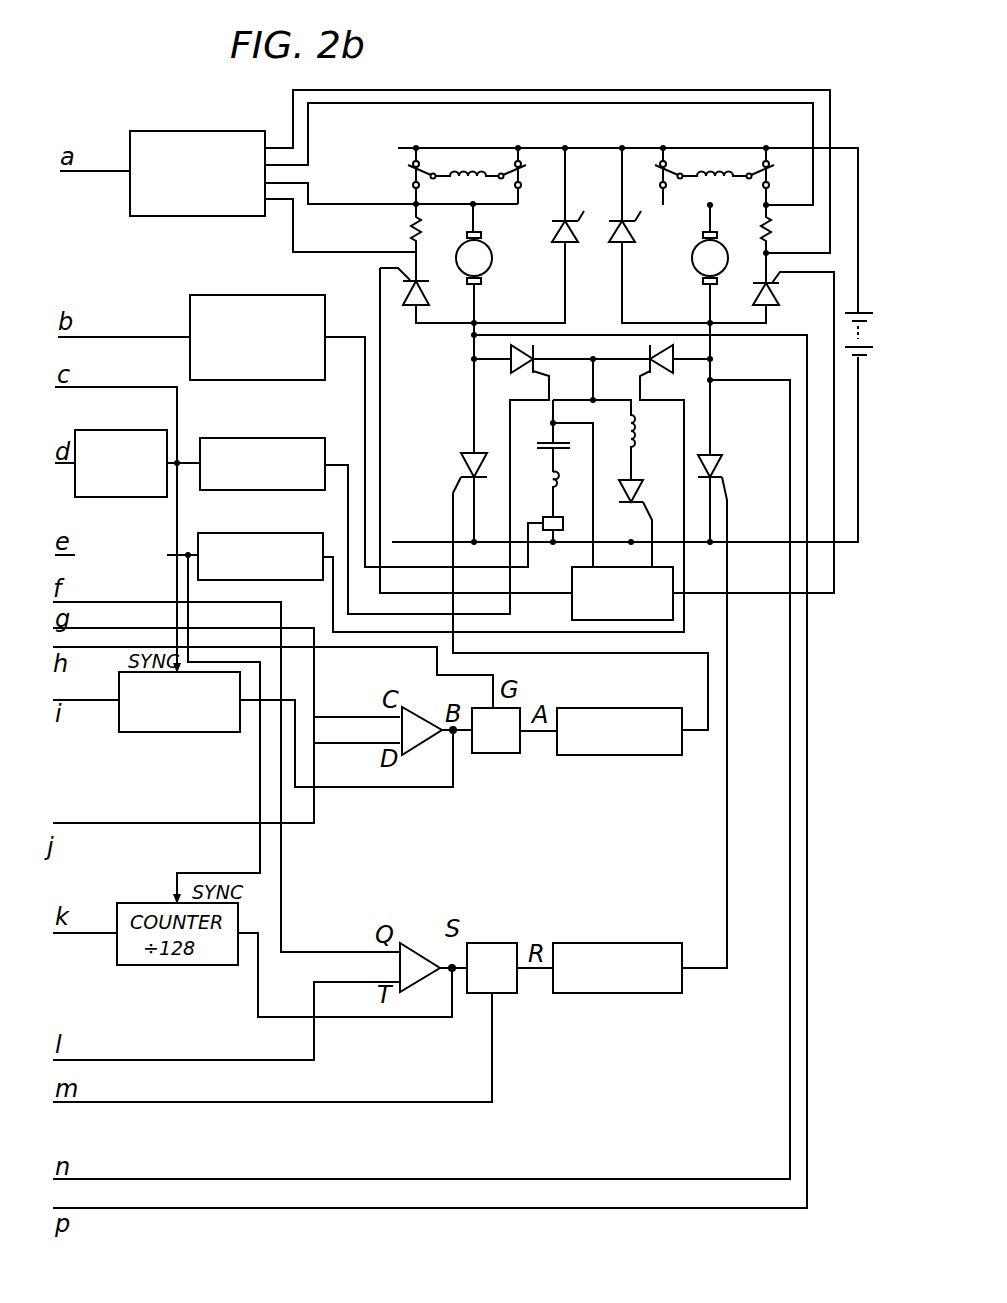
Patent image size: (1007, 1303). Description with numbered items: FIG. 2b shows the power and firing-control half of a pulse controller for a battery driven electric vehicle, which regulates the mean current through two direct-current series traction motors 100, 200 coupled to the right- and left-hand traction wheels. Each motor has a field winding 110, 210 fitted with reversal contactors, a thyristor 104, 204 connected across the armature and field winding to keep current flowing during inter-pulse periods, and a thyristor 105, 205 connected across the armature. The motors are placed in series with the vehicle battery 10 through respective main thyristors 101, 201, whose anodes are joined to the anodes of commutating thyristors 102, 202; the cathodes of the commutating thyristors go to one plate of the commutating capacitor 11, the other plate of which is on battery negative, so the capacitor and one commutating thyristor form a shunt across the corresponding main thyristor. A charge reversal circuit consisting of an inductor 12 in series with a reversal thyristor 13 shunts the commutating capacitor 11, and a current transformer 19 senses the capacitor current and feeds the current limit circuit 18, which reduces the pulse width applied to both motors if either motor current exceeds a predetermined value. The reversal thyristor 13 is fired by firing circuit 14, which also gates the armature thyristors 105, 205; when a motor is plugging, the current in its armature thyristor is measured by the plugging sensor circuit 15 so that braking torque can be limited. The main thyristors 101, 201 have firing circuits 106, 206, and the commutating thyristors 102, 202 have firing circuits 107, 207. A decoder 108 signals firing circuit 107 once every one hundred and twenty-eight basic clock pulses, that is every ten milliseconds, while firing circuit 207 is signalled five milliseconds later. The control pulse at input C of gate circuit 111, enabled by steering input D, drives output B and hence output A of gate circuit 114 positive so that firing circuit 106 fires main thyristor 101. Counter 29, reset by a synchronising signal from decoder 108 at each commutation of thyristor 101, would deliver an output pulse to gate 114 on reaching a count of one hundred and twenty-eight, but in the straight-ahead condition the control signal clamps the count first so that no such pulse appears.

The plugging sensor circuit 15 is at (235, 131).
The current limit circuit 18 is at (224, 295).
The battery 10 is at (866, 312).
The field winding 110 is at (468, 167).
The field winding 210 is at (707, 168).
The D.C. series traction motor 100 is at (487, 266).
The D.C. series traction motor 200 is at (708, 262).
The thyristor 104 is at (552, 232).
The thyristor 204 is at (612, 222).
The armature thyristor 105 is at (410, 307).
The armature thyristor 205 is at (773, 294).
The commutating thyristor 102 is at (511, 367).
The commutating thyristor 202 is at (675, 370).
The main thyristor 101 is at (460, 462).
The main thyristor 201 is at (722, 463).
The commutating capacitor 11 is at (540, 443).
The inductor 12 is at (636, 443).
The reversal thyristor 13 is at (643, 493).
The current transformer 19 is at (545, 517).
The firing circuit 14 is at (572, 606).
The decoder 108 is at (110, 430).
The firing circuit 107 is at (303, 438).
The firing circuit 207 is at (267, 534).
The counter 29 is at (158, 732).
The gate circuit 111 is at (415, 748).
The gate circuit 114 is at (493, 754).
The firing circuit 106 is at (585, 756).
The firing circuit 206 is at (650, 994).